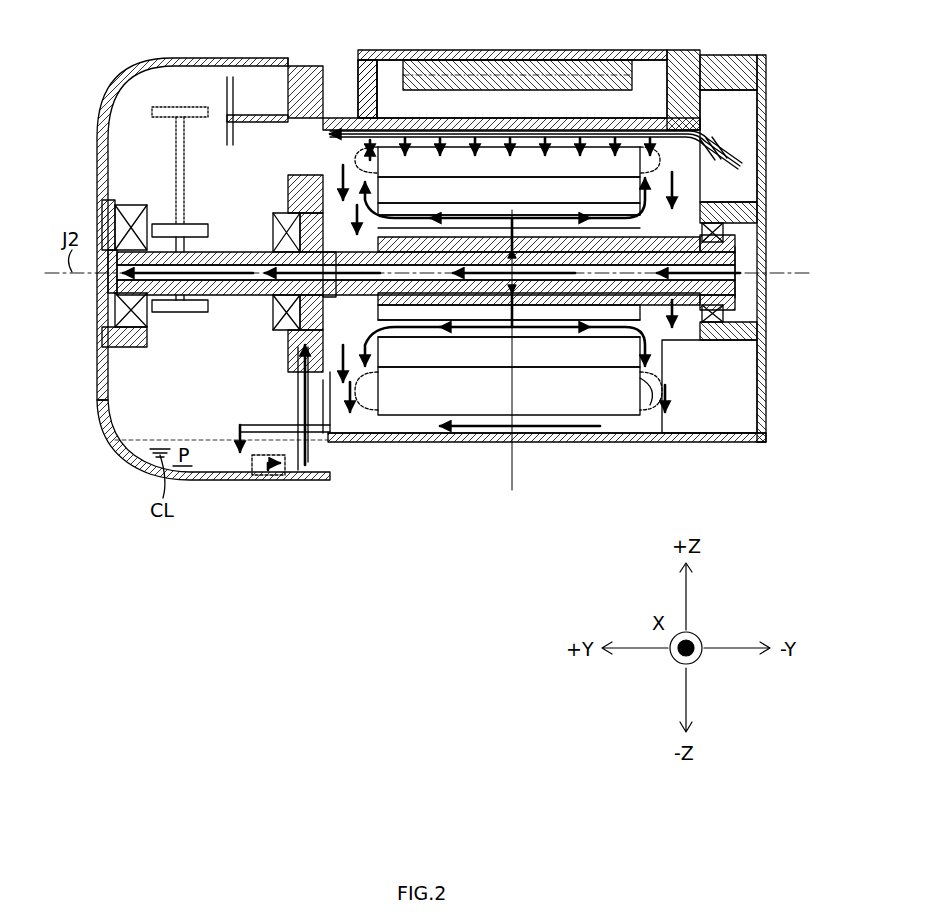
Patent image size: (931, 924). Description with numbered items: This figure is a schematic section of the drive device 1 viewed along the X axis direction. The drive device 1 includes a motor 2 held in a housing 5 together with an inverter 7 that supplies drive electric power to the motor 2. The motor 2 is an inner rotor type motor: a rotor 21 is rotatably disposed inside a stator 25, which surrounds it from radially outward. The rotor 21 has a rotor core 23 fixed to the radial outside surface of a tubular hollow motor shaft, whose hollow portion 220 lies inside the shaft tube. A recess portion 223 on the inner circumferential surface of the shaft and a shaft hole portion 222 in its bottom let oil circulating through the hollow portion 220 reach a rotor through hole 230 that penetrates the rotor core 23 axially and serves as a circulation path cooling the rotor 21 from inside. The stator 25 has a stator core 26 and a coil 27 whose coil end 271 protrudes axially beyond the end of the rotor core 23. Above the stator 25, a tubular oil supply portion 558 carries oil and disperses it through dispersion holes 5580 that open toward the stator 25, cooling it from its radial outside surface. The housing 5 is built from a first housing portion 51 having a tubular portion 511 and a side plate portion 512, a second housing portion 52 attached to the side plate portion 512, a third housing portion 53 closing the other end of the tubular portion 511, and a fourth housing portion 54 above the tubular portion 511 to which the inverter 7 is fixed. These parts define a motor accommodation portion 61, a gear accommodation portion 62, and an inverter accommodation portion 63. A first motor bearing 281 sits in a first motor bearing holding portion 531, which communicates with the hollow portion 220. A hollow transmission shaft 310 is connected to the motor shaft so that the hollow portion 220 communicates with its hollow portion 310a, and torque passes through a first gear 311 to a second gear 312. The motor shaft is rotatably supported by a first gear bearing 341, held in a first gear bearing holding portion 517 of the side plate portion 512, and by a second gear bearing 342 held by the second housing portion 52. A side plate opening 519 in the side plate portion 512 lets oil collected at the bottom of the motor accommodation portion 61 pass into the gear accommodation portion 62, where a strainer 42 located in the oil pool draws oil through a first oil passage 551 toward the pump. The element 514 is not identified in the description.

The drive device 1 is at (105, 62).
The motor 2 is at (668, 365).
The housing 5 is at (748, 455).
The inverter 7 is at (583, 75).
The rotor 21 is at (414, 362).
The rotor core 23 is at (430, 355).
The stator 25 is at (530, 418).
The stator core 26 is at (598, 412).
The coil 27 is at (645, 408).
The coil end 271 is at (650, 405).
The strainer 42 is at (252, 468).
The first housing portion 51 is at (697, 447).
The second housing portion 52 is at (95, 132).
The third housing portion 53 is at (772, 116).
The fourth housing portion 54 is at (505, 52).
The motor accommodation portion 61 is at (730, 410).
The gear accommodation portion 62 is at (196, 95).
The inverter accommodation portion 63 is at (412, 115).
The hollow portion 220 is at (718, 263).
The shaft hole portion 222 is at (500, 298).
The recess portion 223 is at (520, 298).
The rotor through hole 230 is at (512, 359).
The first motor bearing 281 is at (722, 312).
The transmission shaft 310 is at (224, 290).
The hollow portion 310a is at (250, 282).
The first gear 311 is at (183, 312).
The second gear 312 is at (176, 168).
The first gear bearing 341 is at (276, 238).
The second gear bearing 342 is at (148, 318).
The tubular portion 511 is at (478, 442).
The side plate portion 512 is at (298, 195).
The stator support wall 514 is at (362, 88).
The first gear bearing holding portion 517 is at (280, 212).
The side plate opening 519 is at (323, 410).
The first motor bearing holding portion 531 is at (712, 332).
The first oil passage 551 is at (298, 394).
The oil supply portion 558 is at (735, 142).
The dispersion holes 5580 is at (660, 150).